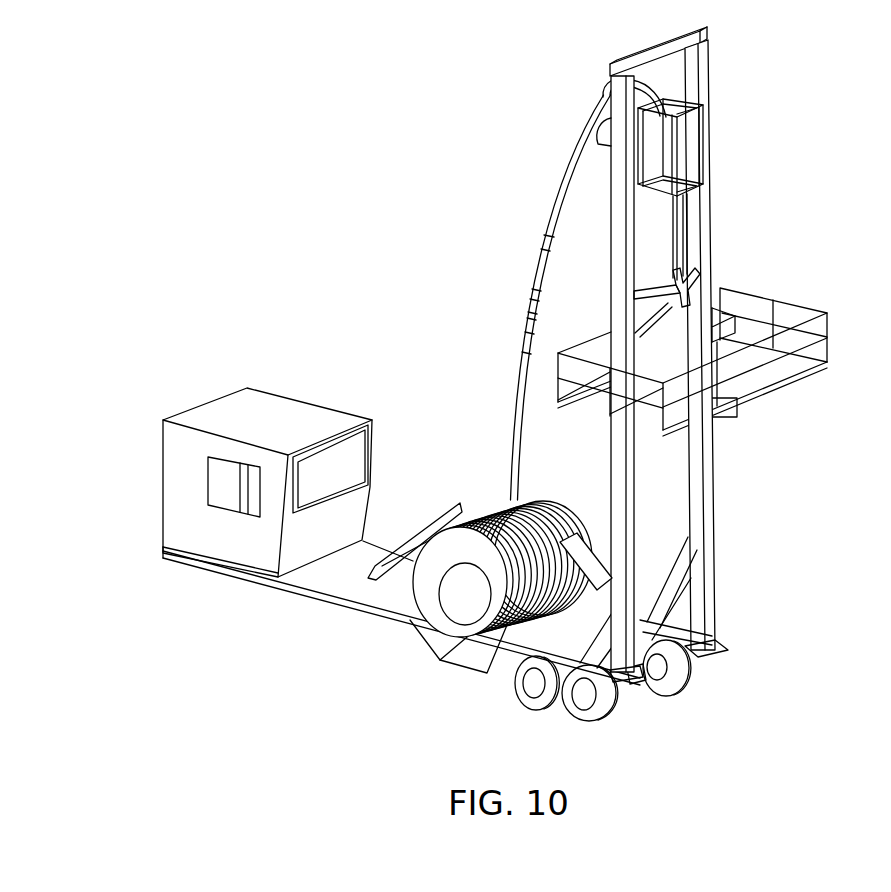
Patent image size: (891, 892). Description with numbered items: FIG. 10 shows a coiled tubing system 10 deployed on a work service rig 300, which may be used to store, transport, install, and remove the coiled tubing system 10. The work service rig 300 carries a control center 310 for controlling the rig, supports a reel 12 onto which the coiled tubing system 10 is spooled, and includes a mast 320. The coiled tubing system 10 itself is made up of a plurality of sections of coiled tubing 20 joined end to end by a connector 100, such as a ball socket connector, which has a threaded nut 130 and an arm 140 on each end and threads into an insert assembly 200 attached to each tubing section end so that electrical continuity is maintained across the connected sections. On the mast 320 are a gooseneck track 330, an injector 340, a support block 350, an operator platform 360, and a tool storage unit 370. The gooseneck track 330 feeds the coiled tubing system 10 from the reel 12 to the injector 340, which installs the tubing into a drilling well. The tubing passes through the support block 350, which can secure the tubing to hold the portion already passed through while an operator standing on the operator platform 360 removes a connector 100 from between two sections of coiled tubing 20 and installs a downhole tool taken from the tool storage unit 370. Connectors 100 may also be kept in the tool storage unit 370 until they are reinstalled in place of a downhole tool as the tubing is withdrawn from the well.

The work service rig 300 is at (304, 186).
The control center 310 is at (283, 395).
The mast 320 is at (612, 314).
The gooseneck track 330 is at (594, 138).
The injector 340 is at (687, 156).
The support block 350 is at (700, 280).
The operator platform 360 is at (800, 360).
The tool storage unit 370 is at (737, 290).
The connector 100 is at (474, 237).
The coiled tubing system 10 is at (508, 411).
The coiled tubing 20 is at (520, 355).
The threaded nut 130 is at (528, 312).
The arm 140 is at (530, 300).
The insert assembly 200 is at (527, 325).
The reel 12 is at (440, 655).